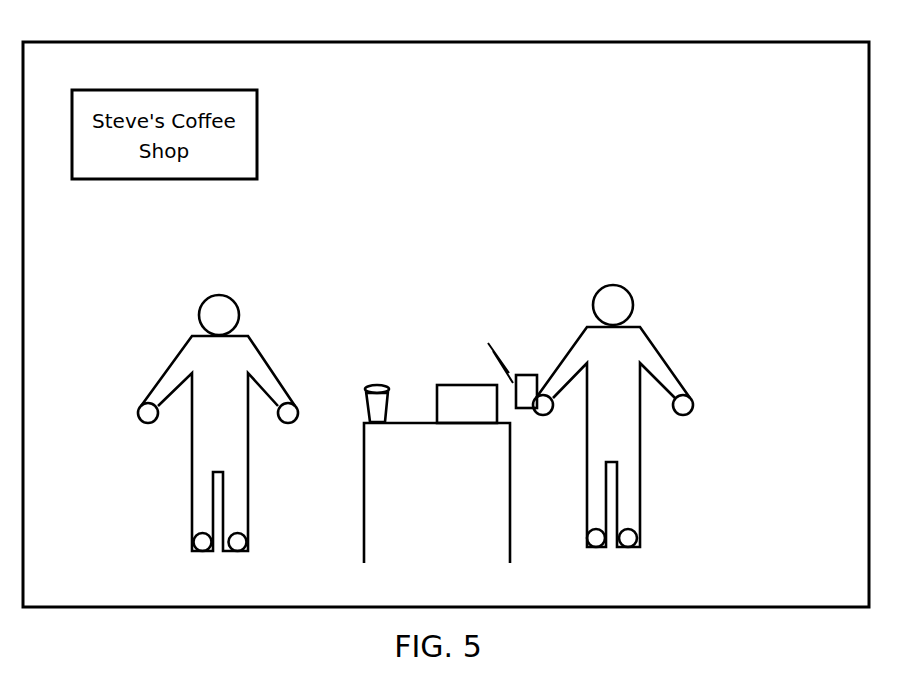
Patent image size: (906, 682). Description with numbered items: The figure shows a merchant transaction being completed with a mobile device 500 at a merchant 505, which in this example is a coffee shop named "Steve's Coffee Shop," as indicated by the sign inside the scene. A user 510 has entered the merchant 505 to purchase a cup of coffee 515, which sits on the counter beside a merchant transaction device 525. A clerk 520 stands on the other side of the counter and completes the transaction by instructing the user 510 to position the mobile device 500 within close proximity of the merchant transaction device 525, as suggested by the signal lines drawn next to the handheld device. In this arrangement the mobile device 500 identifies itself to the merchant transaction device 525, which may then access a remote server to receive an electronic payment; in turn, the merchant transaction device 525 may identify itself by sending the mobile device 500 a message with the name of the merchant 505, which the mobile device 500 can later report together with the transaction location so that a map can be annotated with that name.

The mobile device 500 is at (527, 375).
The merchant 505 is at (789, 42).
The user 510 is at (615, 285).
The cup of coffee 515 is at (378, 383).
The clerk 520 is at (221, 294).
The merchant transaction device 525 is at (472, 383).